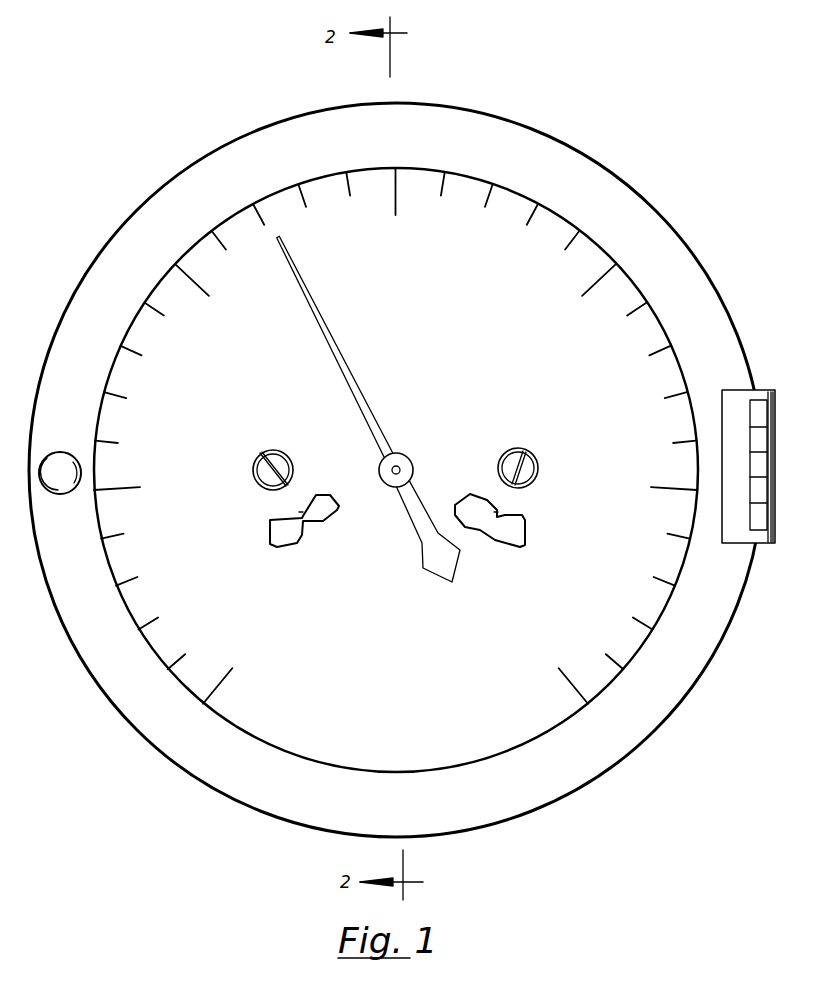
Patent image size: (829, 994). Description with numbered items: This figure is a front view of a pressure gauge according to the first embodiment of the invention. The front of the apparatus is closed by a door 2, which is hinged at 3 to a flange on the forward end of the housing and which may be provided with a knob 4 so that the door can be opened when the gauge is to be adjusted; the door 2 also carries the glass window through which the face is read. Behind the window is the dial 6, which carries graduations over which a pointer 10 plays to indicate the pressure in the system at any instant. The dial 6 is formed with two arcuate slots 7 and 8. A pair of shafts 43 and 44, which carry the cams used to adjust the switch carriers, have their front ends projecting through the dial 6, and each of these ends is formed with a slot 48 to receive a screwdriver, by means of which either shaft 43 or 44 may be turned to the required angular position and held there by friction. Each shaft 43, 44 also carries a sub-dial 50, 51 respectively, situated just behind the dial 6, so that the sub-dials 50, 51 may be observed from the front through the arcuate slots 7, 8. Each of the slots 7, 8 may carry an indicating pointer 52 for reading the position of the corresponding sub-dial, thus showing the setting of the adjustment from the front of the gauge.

The door 2 is at (620, 187).
The hinge 3 is at (760, 542).
The knob 4 is at (52, 452).
The dial 6 is at (466, 382).
The arcuate slot 7 is at (302, 540).
The arcuate slot 8 is at (503, 542).
The pointer 10 is at (334, 331).
The shaft 43 is at (276, 452).
The shaft 44 is at (537, 466).
The slot 48 is at (266, 491).
The sub-dial 50 is at (325, 524).
The sub-dial 51 is at (482, 523).
The indicating pointer 52 is at (299, 512).